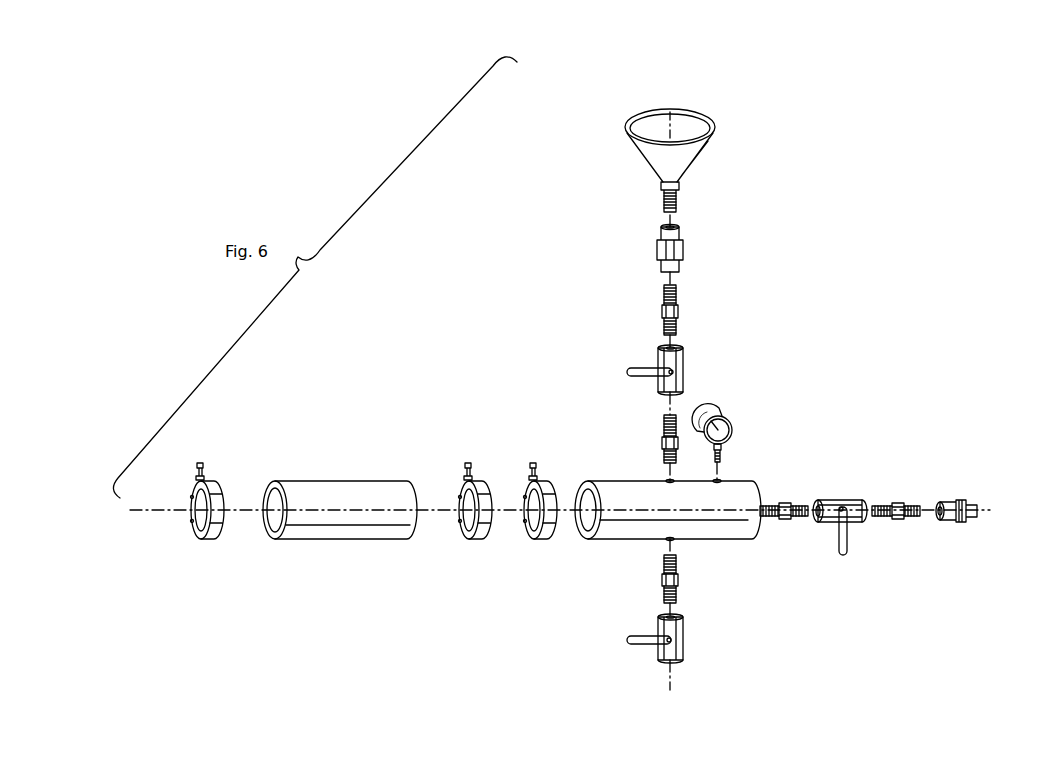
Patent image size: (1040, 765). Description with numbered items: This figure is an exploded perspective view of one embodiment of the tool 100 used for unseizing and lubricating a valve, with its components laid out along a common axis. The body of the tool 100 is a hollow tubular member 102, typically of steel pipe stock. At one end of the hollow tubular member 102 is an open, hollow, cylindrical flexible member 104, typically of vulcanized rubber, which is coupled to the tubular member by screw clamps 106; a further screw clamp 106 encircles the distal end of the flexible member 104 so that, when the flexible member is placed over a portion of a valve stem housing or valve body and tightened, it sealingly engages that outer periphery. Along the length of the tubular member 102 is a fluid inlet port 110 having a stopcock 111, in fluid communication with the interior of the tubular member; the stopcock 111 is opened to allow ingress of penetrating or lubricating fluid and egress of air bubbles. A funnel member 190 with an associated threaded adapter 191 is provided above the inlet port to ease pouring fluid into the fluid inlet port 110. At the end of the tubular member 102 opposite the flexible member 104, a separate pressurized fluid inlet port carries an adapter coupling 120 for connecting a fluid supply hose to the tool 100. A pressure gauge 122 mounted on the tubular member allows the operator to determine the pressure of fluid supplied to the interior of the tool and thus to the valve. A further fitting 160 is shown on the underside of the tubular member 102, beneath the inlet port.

The tool 100 is at (485, 249).
The hollow tubular member 102 is at (745, 540).
The cylindrical flexible member 104 is at (343, 540).
The screw clamp 106 is at (209, 483).
The fluid inlet port 110 is at (662, 578).
The stopcock 111 is at (683, 373).
The adapter coupling 120 is at (945, 502).
The pressure gauge 122 is at (731, 414).
The drain valve 160 is at (683, 638).
The funnel member 190 is at (703, 148).
The threaded adapter 191 is at (679, 308).